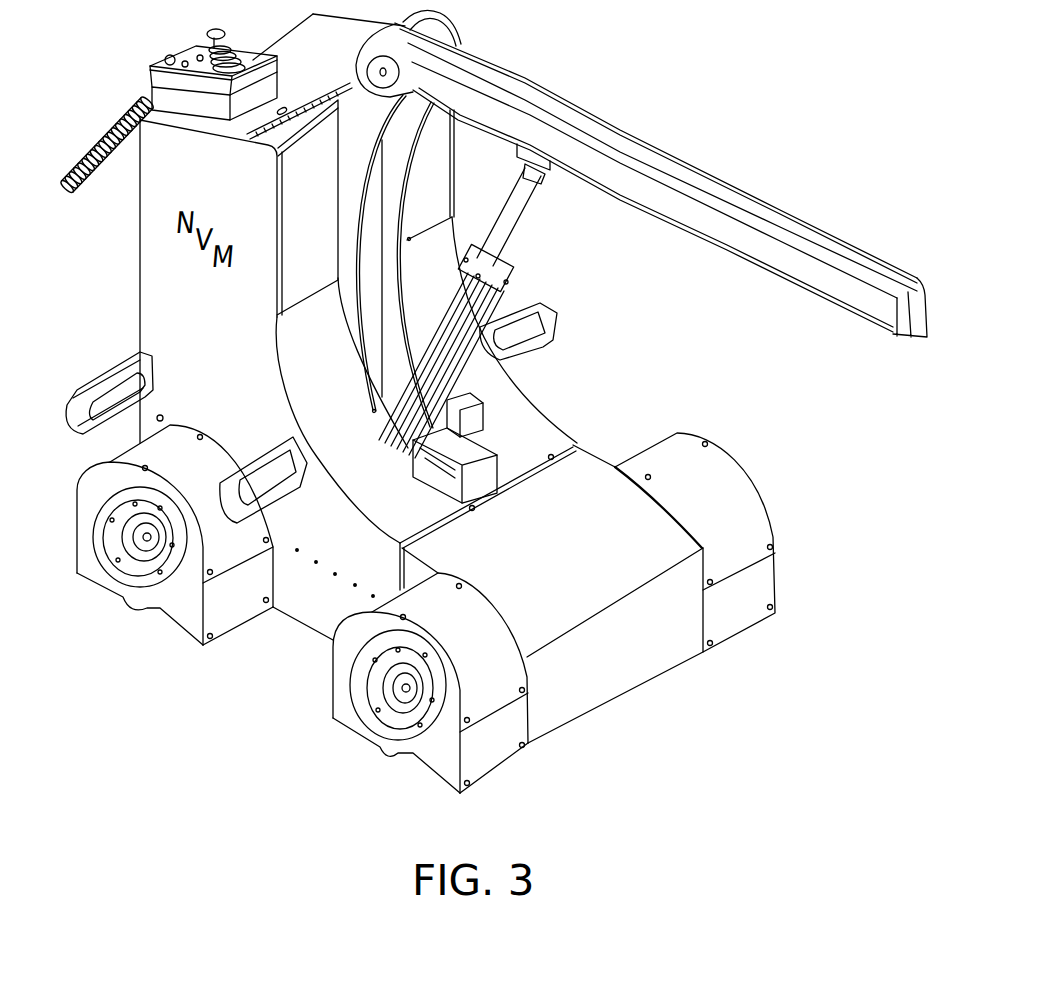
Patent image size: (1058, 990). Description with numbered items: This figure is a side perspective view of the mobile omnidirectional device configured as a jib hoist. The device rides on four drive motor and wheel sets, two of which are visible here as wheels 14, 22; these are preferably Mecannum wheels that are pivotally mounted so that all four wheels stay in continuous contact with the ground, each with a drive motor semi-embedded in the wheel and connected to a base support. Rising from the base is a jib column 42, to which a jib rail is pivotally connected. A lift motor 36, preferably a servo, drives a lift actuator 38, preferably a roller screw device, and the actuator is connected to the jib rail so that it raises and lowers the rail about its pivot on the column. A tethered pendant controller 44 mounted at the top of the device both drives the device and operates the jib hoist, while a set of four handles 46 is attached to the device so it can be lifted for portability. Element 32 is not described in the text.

The wheel 14 is at (147, 598).
The wheel 22 is at (389, 742).
The base body 32 is at (625, 673).
The lift motor 36 is at (423, 461).
The lift actuator 38 is at (455, 292).
The jib column 42 is at (363, 84).
The tethered pendant controller 44 is at (255, 63).
The handles 46 is at (110, 374).